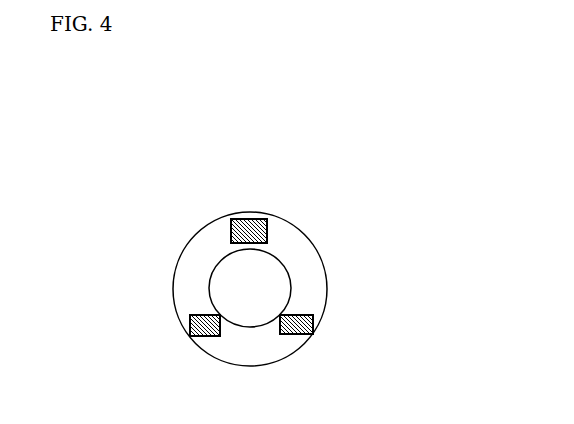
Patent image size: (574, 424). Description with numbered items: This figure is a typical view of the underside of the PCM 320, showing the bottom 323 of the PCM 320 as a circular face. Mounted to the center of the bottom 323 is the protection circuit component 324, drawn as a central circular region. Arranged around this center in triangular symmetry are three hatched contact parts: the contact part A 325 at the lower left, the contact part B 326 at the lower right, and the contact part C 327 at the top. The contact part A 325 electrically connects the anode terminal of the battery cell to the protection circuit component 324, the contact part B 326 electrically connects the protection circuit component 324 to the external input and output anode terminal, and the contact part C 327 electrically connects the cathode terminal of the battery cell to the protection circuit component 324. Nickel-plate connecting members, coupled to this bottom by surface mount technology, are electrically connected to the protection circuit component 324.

The PCM 320 is at (67, 113).
The bottom of the PCM 323 is at (298, 262).
The protection circuit component 324 is at (254, 294).
The contact part A 325 is at (202, 330).
The contact part B 326 is at (305, 323).
The contact part C 327 is at (252, 234).